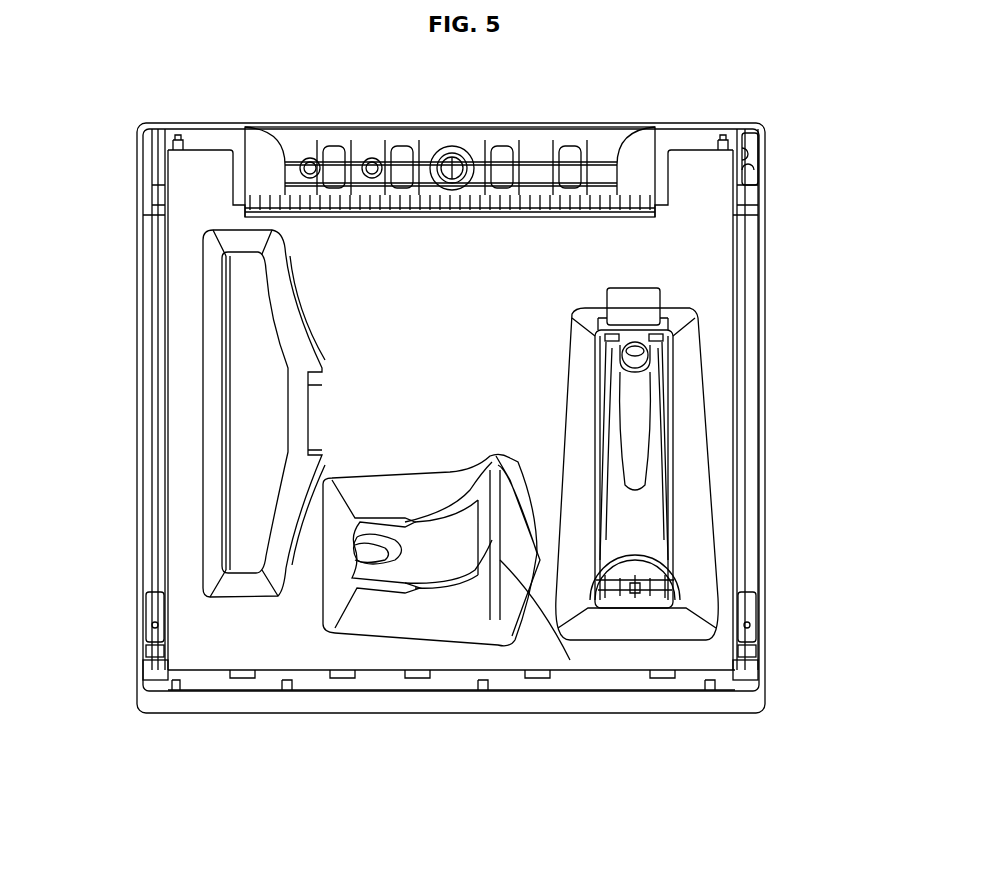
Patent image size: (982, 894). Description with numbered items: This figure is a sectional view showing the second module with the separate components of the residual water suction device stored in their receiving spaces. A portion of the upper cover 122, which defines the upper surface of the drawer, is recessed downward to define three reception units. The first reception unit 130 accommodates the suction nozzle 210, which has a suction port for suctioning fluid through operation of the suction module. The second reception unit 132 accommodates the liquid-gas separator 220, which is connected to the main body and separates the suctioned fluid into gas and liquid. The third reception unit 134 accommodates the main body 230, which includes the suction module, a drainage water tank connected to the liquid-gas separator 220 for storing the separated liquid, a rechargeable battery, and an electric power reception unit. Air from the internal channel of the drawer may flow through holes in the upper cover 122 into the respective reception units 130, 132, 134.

The upper cover 122 is at (705, 242).
The first reception unit 130 is at (232, 615).
The second reception unit 132 is at (385, 612).
The third reception unit 134 is at (690, 625).
The suction nozzle 210 is at (248, 368).
The liquid-gas separator 220 is at (470, 570).
The main body 230 is at (637, 511).